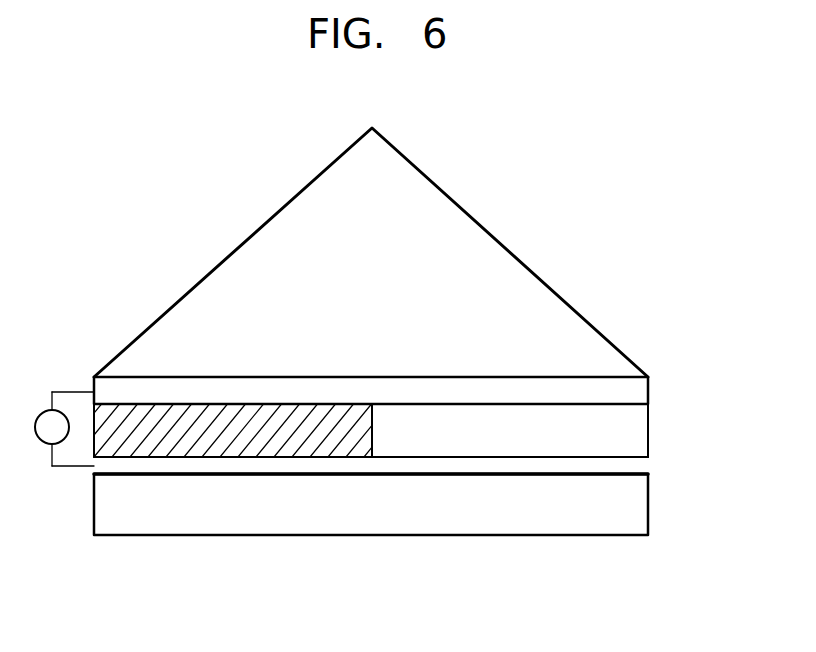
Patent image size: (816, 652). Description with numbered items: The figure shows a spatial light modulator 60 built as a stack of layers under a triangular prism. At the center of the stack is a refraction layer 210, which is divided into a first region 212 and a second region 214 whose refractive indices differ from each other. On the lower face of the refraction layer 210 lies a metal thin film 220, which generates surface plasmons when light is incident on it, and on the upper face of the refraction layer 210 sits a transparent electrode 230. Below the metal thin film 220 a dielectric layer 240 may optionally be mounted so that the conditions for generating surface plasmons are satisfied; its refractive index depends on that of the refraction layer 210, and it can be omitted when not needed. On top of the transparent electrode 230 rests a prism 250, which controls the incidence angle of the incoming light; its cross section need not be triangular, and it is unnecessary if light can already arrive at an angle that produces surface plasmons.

The spatial light modulator 60 is at (148, 166).
The prism 250 is at (594, 342).
The transparent electrode 230 is at (649, 396).
The refraction layer 210 is at (643, 430).
The first region 212 is at (238, 445).
The second region 214 is at (512, 445).
The metal thin film 220 is at (641, 469).
The dielectric layer 240 is at (641, 514).